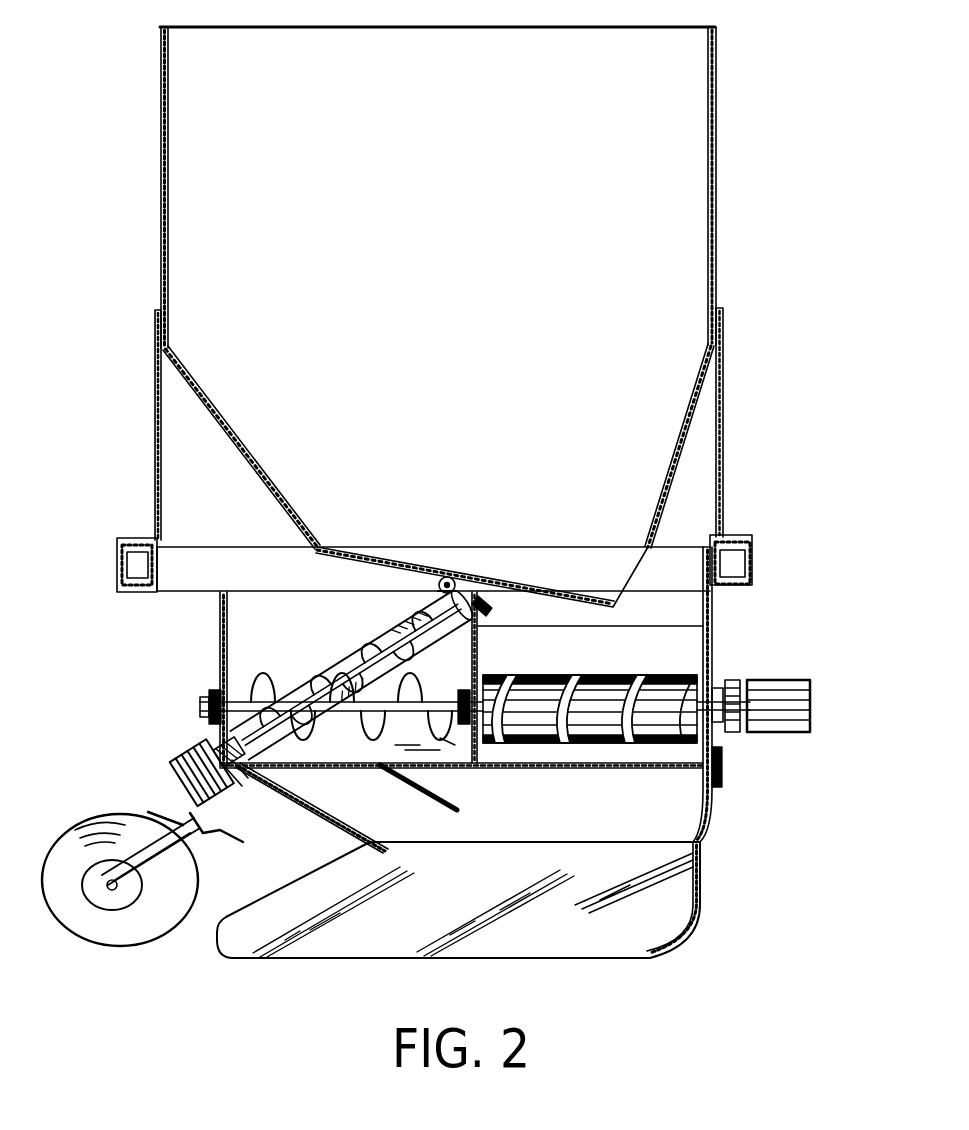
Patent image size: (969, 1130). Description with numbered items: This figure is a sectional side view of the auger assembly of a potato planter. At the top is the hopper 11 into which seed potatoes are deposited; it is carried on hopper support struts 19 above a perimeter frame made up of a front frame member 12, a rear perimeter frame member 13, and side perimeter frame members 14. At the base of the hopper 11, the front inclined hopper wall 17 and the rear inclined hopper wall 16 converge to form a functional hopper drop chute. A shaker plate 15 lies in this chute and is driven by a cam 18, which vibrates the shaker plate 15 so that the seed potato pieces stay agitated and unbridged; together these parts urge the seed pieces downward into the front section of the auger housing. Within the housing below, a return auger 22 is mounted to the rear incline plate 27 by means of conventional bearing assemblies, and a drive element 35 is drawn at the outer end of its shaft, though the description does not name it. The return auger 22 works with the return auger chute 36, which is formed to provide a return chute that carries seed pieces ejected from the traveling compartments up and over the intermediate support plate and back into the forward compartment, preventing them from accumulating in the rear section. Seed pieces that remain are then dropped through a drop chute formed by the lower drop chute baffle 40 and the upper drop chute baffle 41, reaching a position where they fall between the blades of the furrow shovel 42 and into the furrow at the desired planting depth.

The hopper 11 is at (718, 200).
The front frame member 12 is at (752, 563).
The rear perimeter frame member 13 is at (117, 572).
The side perimeter frame members 14 is at (194, 570).
The shaker plate 15 is at (427, 563).
The rear inclined hopper wall 16 is at (242, 437).
The front inclined hopper wall 17 is at (682, 430).
The cam 18 is at (440, 586).
The hopper support struts 19 is at (155, 422).
The return auger 22 is at (332, 668).
The rear incline plate 27 is at (236, 770).
The motor 35 is at (200, 745).
The return auger chute 36 is at (372, 650).
The lower drop chute baffle 40 is at (300, 805).
The upper drop chute baffle 41 is at (447, 795).
The furrow shovel 42 is at (655, 900).